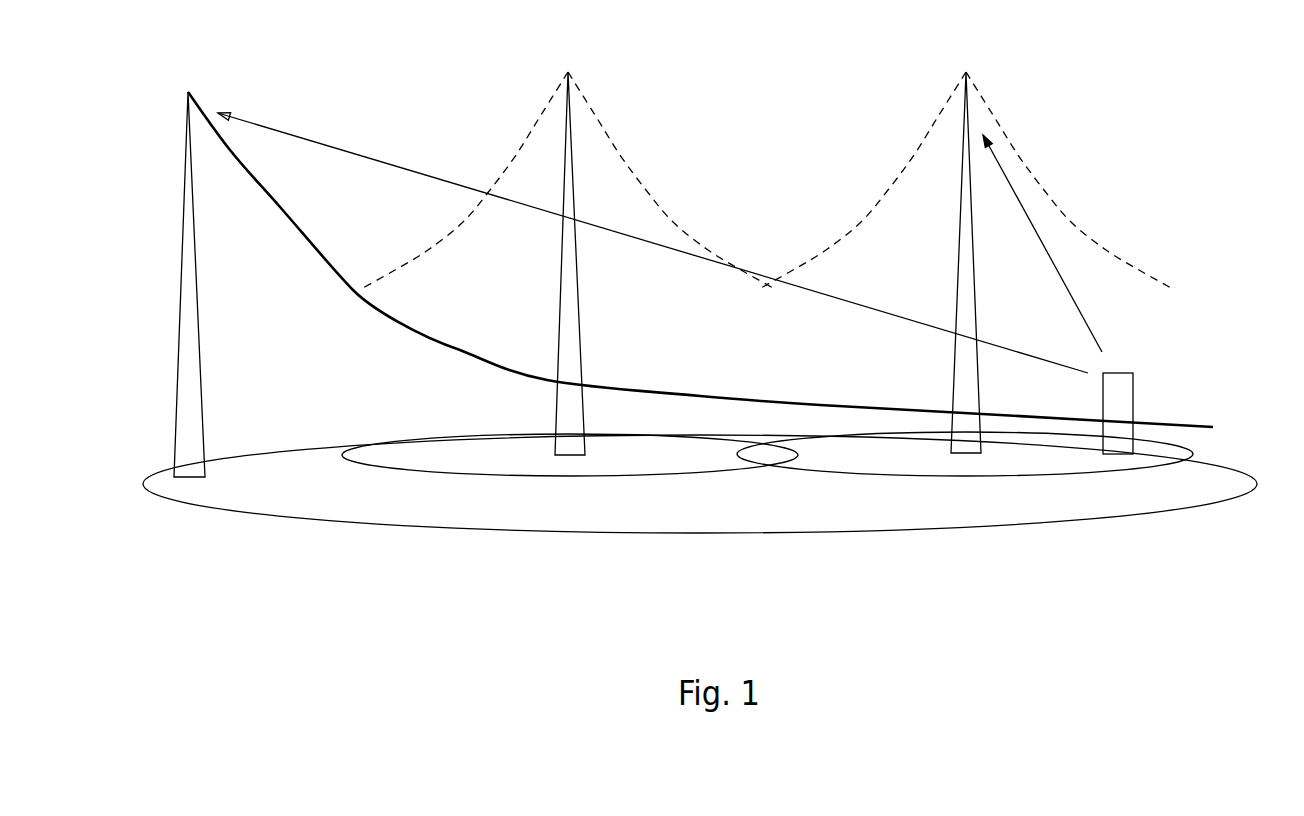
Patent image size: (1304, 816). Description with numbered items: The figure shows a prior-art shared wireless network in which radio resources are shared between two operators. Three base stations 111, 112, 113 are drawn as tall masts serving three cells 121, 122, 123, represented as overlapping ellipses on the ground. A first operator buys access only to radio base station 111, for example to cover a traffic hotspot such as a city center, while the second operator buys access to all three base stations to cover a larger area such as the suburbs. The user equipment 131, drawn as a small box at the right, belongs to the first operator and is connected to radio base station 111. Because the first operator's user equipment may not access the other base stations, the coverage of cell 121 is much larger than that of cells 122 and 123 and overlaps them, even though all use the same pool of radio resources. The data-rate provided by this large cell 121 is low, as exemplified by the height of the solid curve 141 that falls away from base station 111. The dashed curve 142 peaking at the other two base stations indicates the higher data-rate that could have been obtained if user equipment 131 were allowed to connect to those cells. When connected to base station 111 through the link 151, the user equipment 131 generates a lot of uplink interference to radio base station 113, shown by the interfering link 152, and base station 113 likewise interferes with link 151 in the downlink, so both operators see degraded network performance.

The radio base station 111 is at (178, 402).
The radio base station 112 is at (562, 297).
The radio base station 113 is at (957, 272).
The cell 121 is at (295, 488).
The cell 122 is at (510, 452).
The cell 123 is at (921, 450).
The user equipment 131 is at (1127, 388).
The curve 141 is at (307, 214).
The dashed curve 142 is at (887, 190).
The link 151 is at (297, 108).
The interfering link 152 is at (1115, 308).